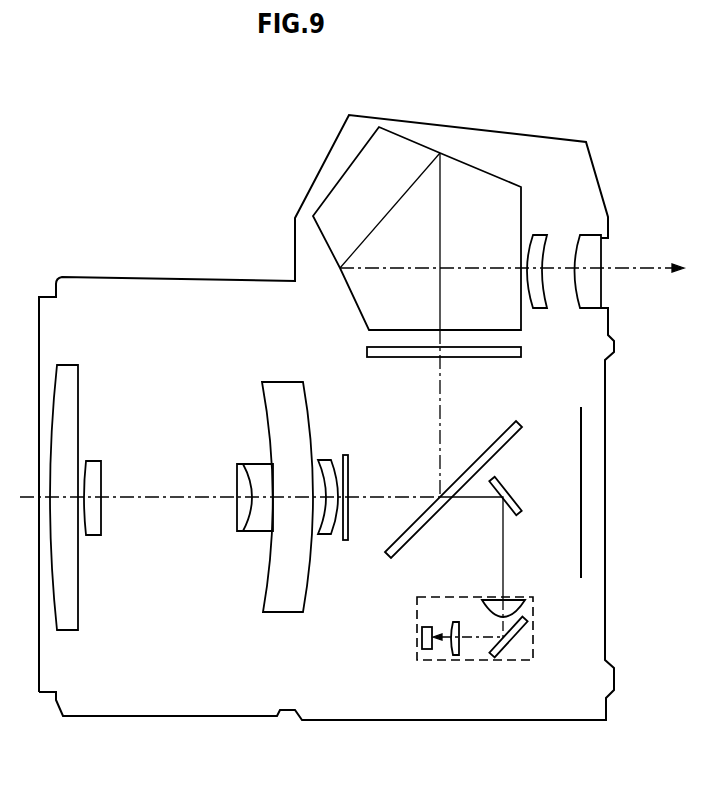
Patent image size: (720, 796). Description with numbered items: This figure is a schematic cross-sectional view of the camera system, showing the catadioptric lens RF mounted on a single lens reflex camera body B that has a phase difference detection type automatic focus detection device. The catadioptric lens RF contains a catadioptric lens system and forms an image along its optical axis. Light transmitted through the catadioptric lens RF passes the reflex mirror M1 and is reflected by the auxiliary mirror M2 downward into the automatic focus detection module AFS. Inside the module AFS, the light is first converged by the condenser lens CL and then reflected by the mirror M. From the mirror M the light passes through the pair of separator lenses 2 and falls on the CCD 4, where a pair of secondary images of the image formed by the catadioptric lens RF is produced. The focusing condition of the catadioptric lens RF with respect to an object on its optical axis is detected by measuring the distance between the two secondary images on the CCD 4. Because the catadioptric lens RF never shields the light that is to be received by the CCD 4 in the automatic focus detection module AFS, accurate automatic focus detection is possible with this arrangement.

The single lens reflex camera body B is at (550, 145).
The catadioptric lens RF is at (326, 437).
The reflex mirror M1 is at (495, 438).
The auxiliary mirror M2 is at (522, 507).
The automatic focus detection module AFS is at (463, 625).
The condenser lens CL is at (522, 592).
The mirror M is at (492, 660).
The pair of separator lenses 2 is at (458, 660).
The CCD 4 is at (423, 650).